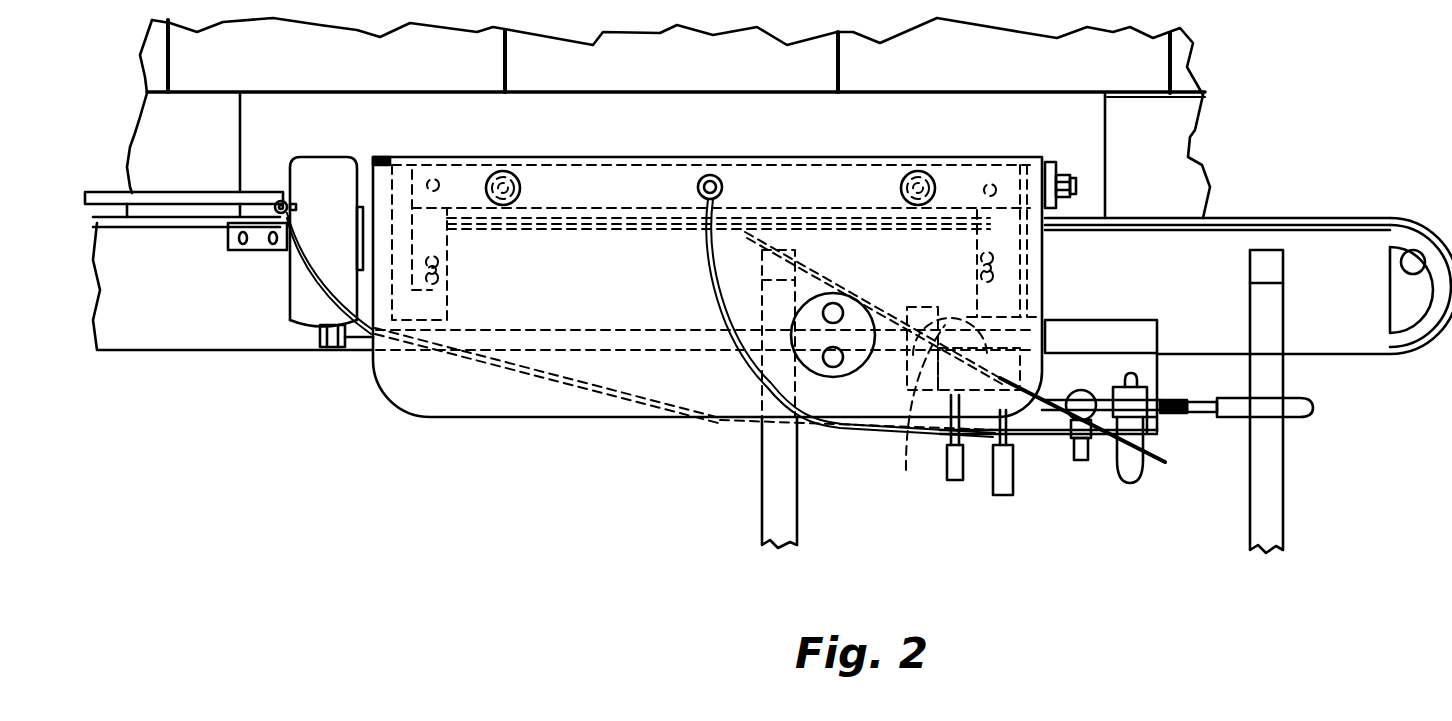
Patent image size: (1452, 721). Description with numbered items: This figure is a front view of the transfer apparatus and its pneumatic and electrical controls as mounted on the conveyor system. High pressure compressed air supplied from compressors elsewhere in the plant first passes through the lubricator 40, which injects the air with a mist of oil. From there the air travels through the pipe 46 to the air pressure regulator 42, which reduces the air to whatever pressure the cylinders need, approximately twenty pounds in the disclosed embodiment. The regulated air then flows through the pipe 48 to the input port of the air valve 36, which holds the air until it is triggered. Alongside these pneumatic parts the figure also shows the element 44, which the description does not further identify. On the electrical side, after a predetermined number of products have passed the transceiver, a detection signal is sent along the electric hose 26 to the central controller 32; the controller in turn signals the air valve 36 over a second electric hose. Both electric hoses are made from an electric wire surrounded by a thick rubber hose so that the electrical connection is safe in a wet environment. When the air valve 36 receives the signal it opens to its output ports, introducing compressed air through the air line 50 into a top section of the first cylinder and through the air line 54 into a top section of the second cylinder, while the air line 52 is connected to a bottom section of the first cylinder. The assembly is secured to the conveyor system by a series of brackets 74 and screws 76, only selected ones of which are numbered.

The electric hose 26 is at (367, 353).
The central controller 32 is at (813, 347).
The air valve 36 is at (950, 372).
The lubricator 40 is at (1133, 483).
The air pressure regulator 42 is at (1079, 462).
The hose coupling 44 is at (1160, 392).
The pipe 46 is at (1108, 388).
The pipe 48 is at (1050, 443).
The air line 50 is at (708, 265).
The air line 52 is at (850, 257).
The air line 54 is at (357, 325).
The bracket 74 is at (1063, 167).
The screw 76 is at (1076, 178).